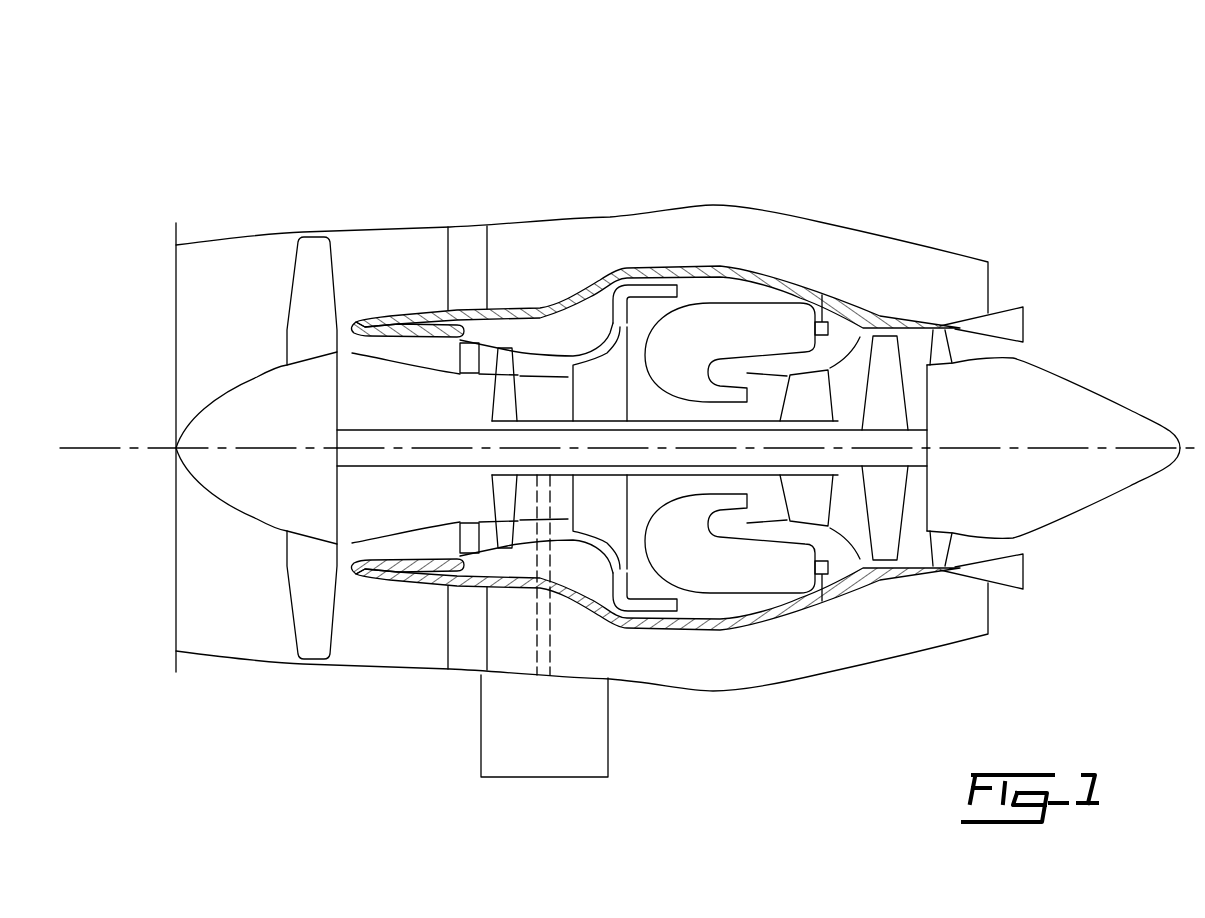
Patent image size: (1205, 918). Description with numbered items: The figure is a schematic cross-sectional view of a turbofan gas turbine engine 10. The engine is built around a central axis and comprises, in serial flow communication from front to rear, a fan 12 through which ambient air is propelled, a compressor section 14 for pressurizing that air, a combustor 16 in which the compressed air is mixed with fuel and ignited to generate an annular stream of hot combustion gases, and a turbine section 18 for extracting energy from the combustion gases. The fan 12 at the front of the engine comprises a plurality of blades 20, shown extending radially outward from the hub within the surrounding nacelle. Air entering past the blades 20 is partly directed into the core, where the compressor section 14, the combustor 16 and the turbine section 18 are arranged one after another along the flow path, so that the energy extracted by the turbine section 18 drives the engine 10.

The gas turbine engine 10 is at (865, 163).
The fan 12 is at (307, 585).
The compressor section 14 is at (536, 357).
The combustor 16 is at (717, 330).
The turbine section 18 is at (848, 512).
The blades 20 is at (307, 301).